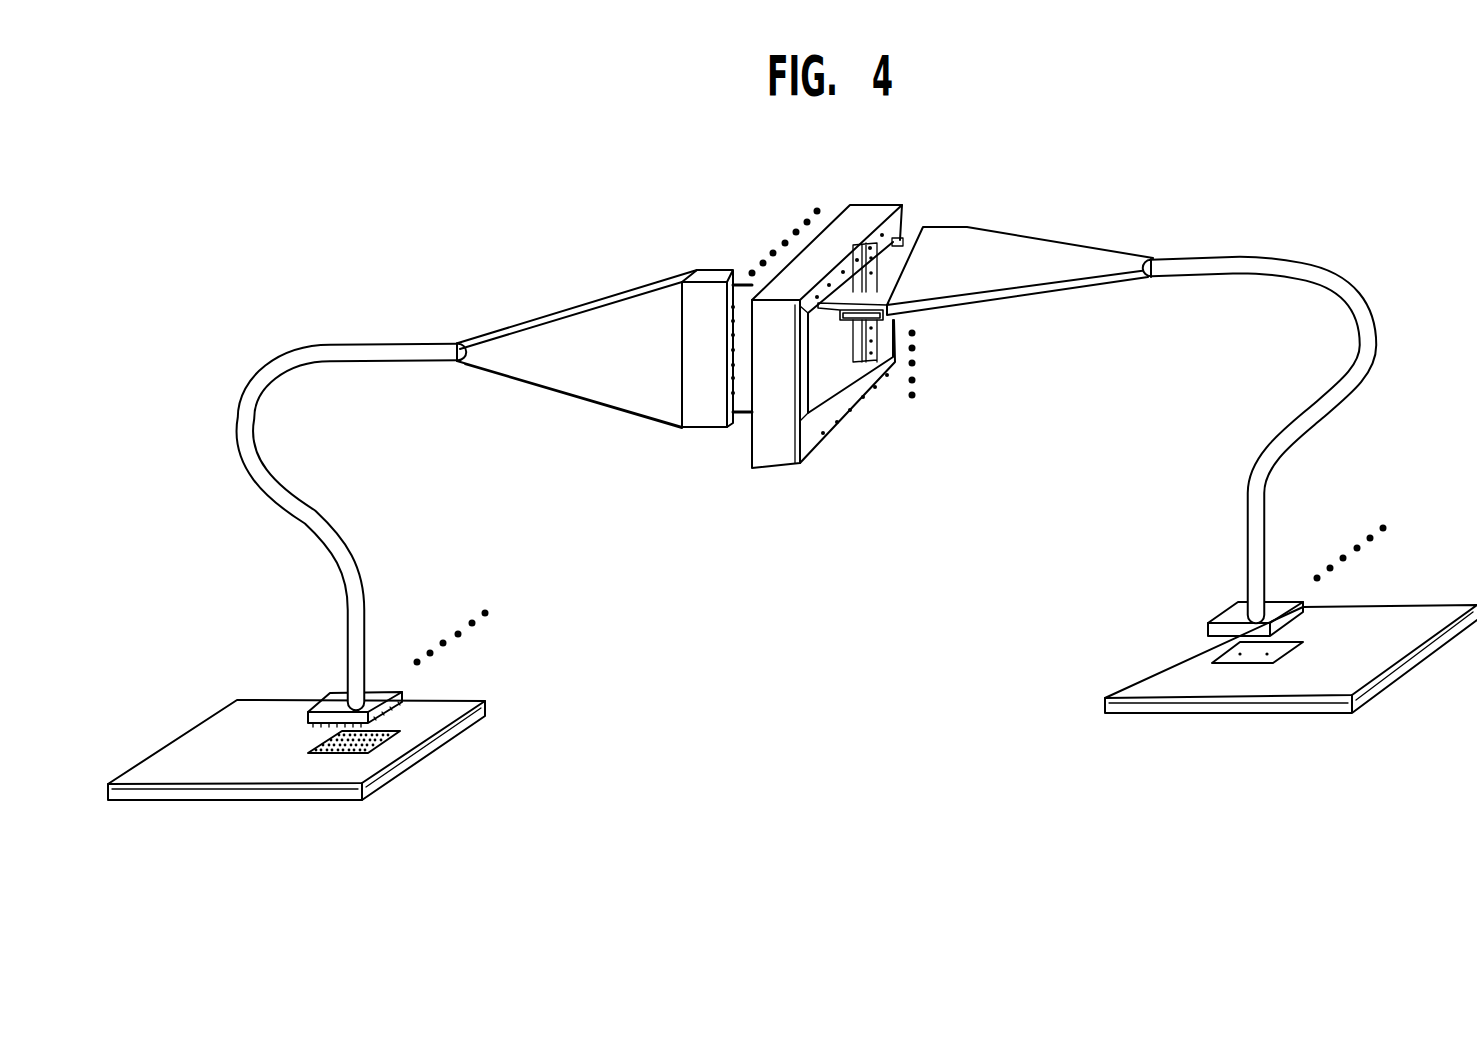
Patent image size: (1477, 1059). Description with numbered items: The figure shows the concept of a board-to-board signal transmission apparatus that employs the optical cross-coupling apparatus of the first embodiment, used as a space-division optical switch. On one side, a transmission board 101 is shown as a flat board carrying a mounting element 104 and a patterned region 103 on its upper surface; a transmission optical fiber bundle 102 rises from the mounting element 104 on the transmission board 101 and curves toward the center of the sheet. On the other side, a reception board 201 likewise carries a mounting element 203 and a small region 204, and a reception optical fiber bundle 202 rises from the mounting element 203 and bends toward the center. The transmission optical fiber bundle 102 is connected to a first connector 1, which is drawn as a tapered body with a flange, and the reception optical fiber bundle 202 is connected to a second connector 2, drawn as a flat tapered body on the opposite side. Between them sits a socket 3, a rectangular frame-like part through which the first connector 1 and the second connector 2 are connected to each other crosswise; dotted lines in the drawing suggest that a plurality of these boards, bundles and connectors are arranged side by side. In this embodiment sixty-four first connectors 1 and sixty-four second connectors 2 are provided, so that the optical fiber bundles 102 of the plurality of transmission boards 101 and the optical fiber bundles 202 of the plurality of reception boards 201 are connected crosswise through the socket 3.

The first connector 1 is at (572, 330).
The second connector 2 is at (1017, 253).
The socket 3 is at (862, 222).
The transmission board 101 is at (207, 795).
The transmission optical fiber bundle 102 is at (262, 480).
The first antenna pattern 103 is at (380, 743).
The first waveguide mount 104 is at (403, 691).
The reception board 201 is at (1188, 707).
The reception optical fiber bundle 202 is at (1338, 410).
The second waveguide mount 203 is at (1232, 607).
The second antenna pattern 204 is at (1213, 662).